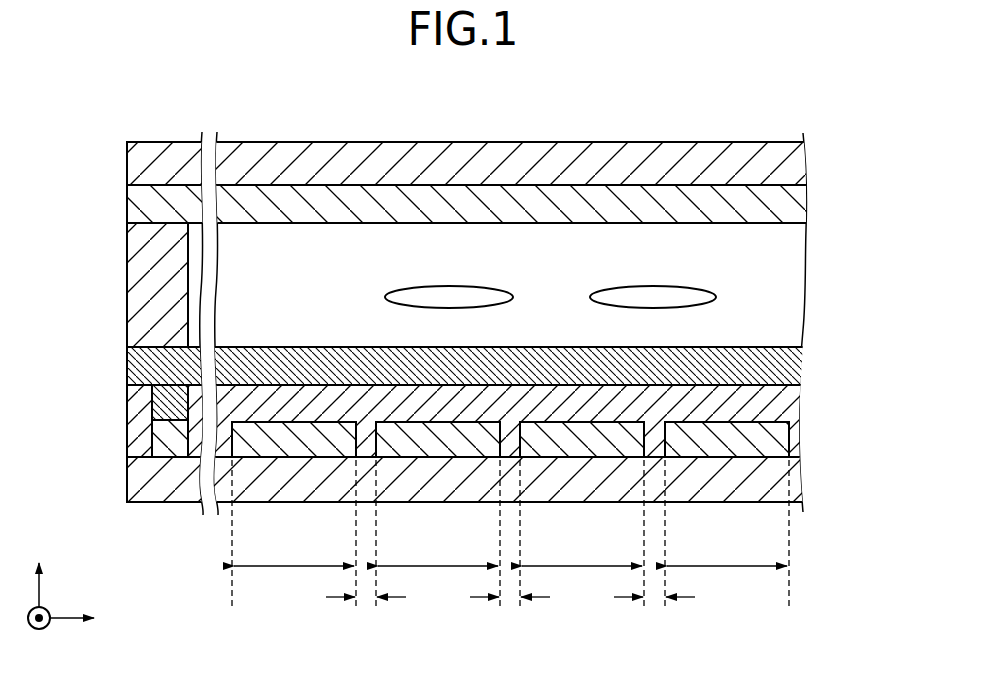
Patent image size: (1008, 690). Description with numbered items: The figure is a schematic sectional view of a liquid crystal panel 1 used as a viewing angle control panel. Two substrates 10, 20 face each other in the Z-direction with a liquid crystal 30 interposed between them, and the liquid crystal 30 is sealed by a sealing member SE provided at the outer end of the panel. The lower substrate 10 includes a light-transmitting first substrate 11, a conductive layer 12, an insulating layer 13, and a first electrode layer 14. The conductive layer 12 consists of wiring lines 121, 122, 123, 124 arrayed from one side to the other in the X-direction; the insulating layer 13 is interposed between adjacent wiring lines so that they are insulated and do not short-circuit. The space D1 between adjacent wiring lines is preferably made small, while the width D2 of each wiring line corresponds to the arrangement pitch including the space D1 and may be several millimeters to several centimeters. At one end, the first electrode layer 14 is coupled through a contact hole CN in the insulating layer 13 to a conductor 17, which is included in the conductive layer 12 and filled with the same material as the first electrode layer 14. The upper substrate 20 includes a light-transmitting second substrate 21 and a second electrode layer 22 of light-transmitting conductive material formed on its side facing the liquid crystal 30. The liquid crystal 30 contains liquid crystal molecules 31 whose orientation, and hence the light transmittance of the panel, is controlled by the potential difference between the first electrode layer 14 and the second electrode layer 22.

The liquid crystal panel 1 is at (466, 353).
The substrate 10 is at (490, 448).
The first substrate 11 is at (498, 479).
The conductive layer 12 is at (551, 486).
The wiring line 121 is at (298, 445).
The wiring line 122 is at (442, 445).
The wiring line 123 is at (586, 445).
The wiring line 124 is at (728, 445).
The insulating layer 13 is at (788, 405).
The first electrode layer 14 is at (787, 368).
The conductor 17 is at (154, 436).
The substrate 20 is at (522, 183).
The second substrate 21 is at (790, 158).
The second electrode layer 22 is at (498, 204).
The liquid crystal 30 is at (490, 285).
The liquid crystal molecules 31 is at (692, 293).
The sealing member SE is at (147, 281).
The contact hole CN is at (165, 397).
The space D1 is at (366, 603).
The width D2 is at (510, 535).